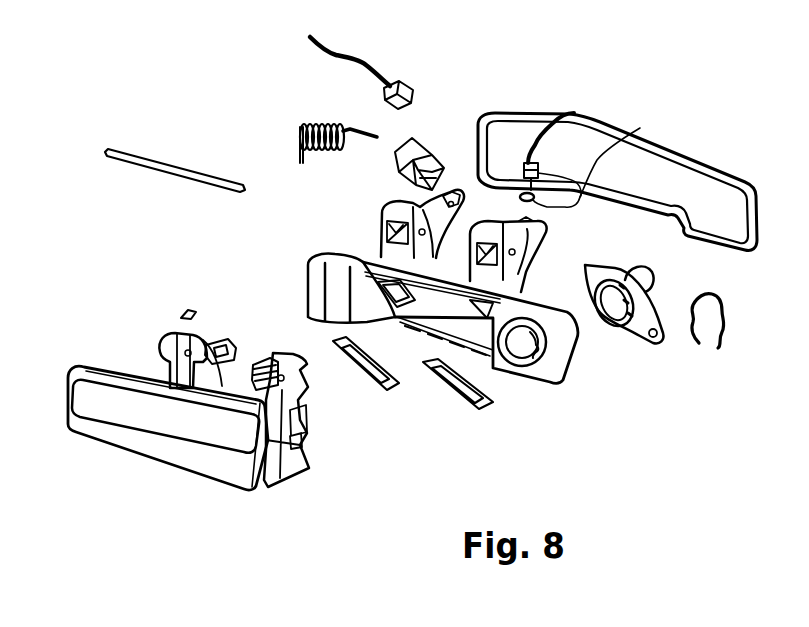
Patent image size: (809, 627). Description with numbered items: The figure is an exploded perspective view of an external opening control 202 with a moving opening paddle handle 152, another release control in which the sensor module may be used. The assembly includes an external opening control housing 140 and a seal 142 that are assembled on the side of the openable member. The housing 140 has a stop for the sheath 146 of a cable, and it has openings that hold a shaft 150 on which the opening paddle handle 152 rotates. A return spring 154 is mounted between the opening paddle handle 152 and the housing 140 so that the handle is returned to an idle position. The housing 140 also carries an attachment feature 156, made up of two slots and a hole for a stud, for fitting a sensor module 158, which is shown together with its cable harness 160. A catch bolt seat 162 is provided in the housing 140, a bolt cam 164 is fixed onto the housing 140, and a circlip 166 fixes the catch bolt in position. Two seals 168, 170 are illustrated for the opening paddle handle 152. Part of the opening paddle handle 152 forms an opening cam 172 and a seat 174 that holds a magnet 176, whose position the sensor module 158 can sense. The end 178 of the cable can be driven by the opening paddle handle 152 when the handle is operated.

The external opening control housing 140 is at (452, 344).
The seal 142 is at (752, 252).
The sheath 146 is at (571, 113).
The shaft 150 is at (165, 165).
The opening paddle handle 152 is at (188, 402).
The return spring 154 is at (298, 122).
The attachment feature 156 is at (463, 193).
The sensor module 158 is at (397, 174).
The cable harness 160 is at (411, 82).
The catch bolt seat 162 is at (521, 358).
The bolt cam 164 is at (626, 344).
The circlip 166 is at (728, 350).
The seal 168 is at (385, 388).
The seal 170 is at (455, 402).
The opening cam 172 is at (177, 335).
The seat 174 is at (219, 343).
The magnet 176 is at (188, 310).
The end of the cable 178 is at (620, 134).
The external opening control 202 is at (127, 535).